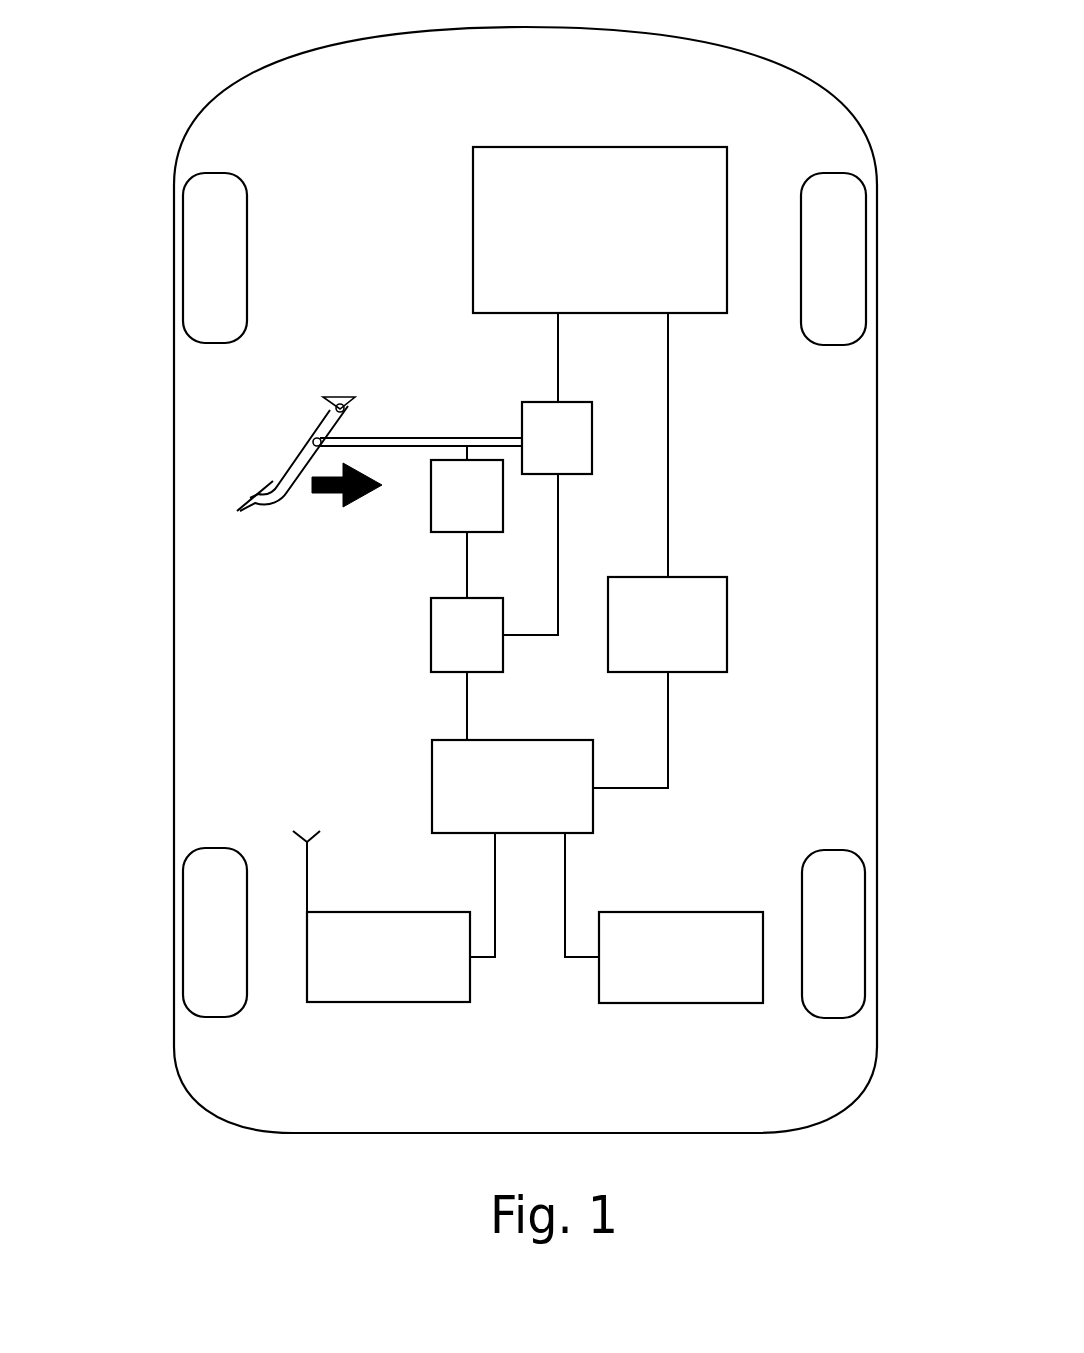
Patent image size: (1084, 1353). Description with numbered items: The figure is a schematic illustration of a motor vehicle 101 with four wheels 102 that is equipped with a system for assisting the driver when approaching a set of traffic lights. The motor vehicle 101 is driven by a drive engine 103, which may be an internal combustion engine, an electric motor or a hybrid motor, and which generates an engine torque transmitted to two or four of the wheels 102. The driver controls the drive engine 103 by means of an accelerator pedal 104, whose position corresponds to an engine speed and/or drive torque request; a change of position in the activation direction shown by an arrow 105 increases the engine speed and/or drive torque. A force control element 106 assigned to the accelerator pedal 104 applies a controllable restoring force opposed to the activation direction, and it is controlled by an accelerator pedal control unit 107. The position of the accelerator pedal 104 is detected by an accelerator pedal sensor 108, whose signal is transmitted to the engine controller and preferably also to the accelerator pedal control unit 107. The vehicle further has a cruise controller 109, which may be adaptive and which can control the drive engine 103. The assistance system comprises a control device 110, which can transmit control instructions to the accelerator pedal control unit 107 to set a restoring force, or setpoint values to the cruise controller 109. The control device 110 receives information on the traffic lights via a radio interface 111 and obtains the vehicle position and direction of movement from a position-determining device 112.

The motor vehicle 101 is at (324, 45).
The wheels 102 is at (183, 247).
The drive engine 103 is at (600, 362).
The accelerator pedal 104 is at (322, 420).
The arrow 105 is at (327, 499).
The force control element 106 is at (467, 529).
The accelerator pedal control unit 107 is at (494, 607).
The accelerator pedal sensor 108 is at (557, 438).
The cruise controller 109 is at (660, 682).
The control device 110 is at (515, 848).
The radio interface 111 is at (381, 916).
The position-determining device 112 is at (681, 957).